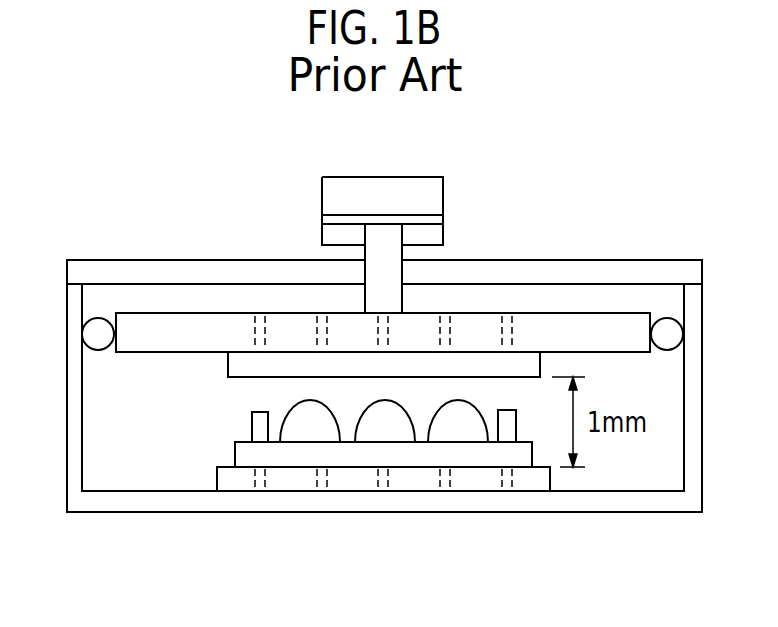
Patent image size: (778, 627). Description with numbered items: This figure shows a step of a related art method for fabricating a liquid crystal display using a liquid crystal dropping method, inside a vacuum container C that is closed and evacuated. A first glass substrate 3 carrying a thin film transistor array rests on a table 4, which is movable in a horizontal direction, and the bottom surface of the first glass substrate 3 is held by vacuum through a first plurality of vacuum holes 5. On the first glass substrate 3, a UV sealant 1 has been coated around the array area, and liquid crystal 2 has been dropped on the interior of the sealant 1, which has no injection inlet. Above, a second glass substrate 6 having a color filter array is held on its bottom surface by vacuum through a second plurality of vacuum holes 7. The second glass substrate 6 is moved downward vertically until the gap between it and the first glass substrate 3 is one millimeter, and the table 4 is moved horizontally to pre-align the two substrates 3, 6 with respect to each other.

The UV sealant 1 is at (257, 424).
The liquid crystal 2 is at (393, 428).
The first glass substrate 3 is at (512, 455).
The table 4 is at (287, 478).
The first plurality of vacuum holes 5 is at (327, 478).
The second glass substrate 6 is at (232, 360).
The second plurality of vacuum holes 7 is at (450, 332).
The vacuum container C is at (612, 505).